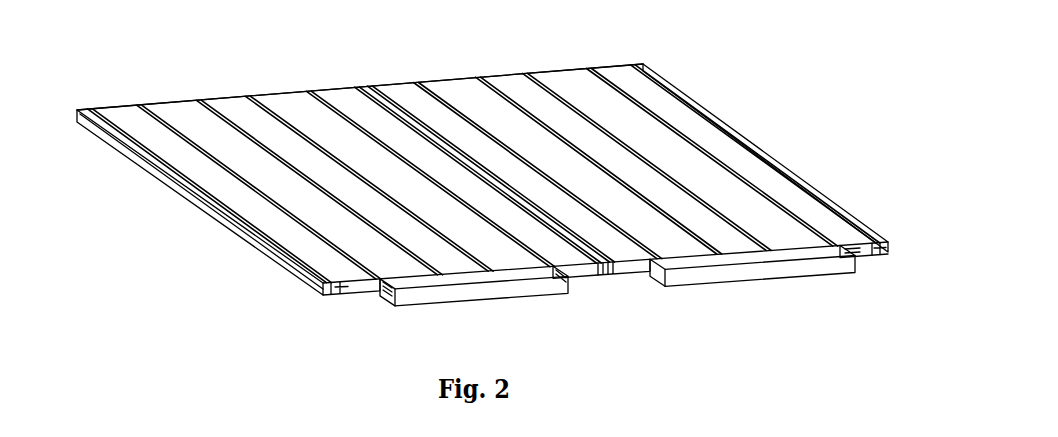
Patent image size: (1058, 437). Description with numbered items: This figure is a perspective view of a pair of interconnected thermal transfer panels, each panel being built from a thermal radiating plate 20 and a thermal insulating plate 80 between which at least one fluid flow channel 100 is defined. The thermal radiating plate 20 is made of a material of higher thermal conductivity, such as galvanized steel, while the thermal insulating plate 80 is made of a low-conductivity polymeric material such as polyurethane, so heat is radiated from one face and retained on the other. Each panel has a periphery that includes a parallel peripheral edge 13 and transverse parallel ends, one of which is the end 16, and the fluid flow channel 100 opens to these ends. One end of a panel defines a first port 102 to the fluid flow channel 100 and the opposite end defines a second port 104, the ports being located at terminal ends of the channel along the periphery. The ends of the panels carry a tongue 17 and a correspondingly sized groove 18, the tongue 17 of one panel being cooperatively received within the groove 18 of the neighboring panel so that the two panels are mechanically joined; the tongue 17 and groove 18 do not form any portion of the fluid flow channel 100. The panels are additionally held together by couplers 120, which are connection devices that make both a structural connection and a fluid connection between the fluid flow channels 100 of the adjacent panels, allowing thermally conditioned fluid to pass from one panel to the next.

The peripheral edge 13 is at (178, 195).
The end 16 is at (92, 106).
The tongue 17 is at (890, 244).
The groove 18 is at (332, 293).
The thermal radiating plate 20 is at (672, 108).
The thermal insulating plate 80 is at (858, 260).
The fluid flow channel 100 is at (638, 267).
The first port 102 is at (376, 286).
The second port 104 is at (163, 101).
The coupler 120 is at (498, 288).